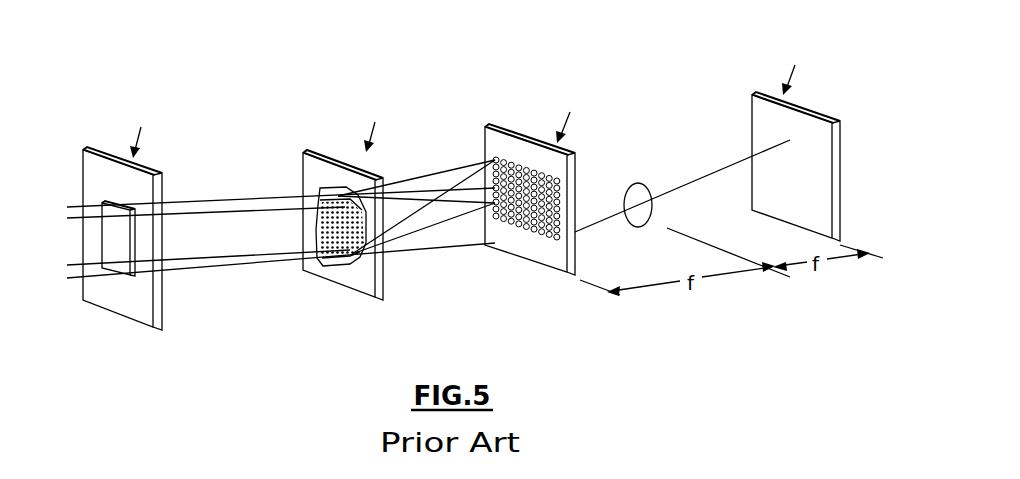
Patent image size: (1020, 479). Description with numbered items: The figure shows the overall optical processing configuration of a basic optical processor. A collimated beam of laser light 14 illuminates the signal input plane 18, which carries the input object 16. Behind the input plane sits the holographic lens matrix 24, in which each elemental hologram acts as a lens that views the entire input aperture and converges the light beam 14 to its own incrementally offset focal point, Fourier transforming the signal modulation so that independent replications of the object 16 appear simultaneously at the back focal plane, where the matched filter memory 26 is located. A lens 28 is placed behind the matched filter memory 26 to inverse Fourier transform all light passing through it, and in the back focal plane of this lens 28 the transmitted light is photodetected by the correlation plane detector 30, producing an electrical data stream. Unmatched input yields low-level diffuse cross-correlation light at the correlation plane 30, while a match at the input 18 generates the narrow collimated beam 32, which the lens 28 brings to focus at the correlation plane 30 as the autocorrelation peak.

The collimated beam of laser light 14 is at (67, 207).
The object 16 is at (102, 250).
The signal input plane 18 is at (83, 160).
The holographic lens matrix 24 is at (303, 172).
The matched filter memory 26 is at (487, 150).
The lens 28 is at (623, 200).
The correlation plane detector 30 is at (840, 158).
The narrow collimated beam 32 is at (710, 175).